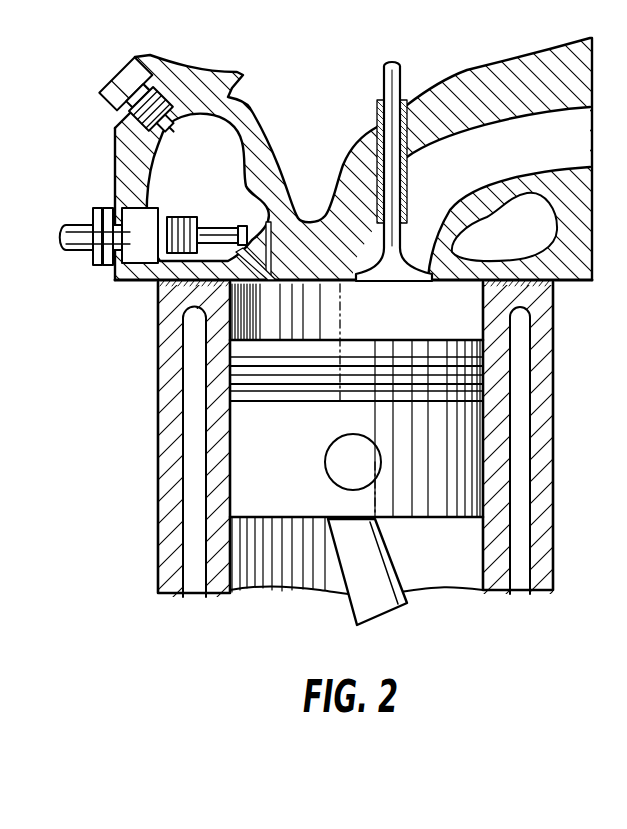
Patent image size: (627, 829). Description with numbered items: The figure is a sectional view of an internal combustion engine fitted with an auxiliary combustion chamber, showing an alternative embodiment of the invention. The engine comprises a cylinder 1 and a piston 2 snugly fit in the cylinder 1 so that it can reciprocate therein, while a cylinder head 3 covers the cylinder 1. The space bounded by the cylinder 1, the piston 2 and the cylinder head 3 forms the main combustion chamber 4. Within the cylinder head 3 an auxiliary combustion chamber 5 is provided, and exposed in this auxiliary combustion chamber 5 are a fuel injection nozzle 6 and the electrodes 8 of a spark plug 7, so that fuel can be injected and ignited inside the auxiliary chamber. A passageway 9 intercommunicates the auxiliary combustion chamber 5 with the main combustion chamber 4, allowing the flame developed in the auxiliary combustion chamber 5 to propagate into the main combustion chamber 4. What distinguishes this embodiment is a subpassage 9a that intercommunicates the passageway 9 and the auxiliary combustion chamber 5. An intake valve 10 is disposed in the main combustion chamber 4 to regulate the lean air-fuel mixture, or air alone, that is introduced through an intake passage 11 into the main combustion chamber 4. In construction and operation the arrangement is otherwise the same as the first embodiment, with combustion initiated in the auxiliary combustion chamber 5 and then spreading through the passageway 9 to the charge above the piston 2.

The cylinder 1 is at (542, 360).
The piston 2 is at (422, 505).
The cylinder head 3 is at (281, 162).
The main combustion chamber 4 is at (344, 327).
The auxiliary combustion chamber 5 is at (208, 194).
The fuel injection nozzle 6 is at (170, 133).
The spark plug 7 is at (140, 248).
The electrodes 8 is at (241, 230).
The passageway 9 is at (262, 284).
The subpassage 9a is at (277, 243).
The intake valve 10 is at (396, 287).
The intake passage 11 is at (480, 188).